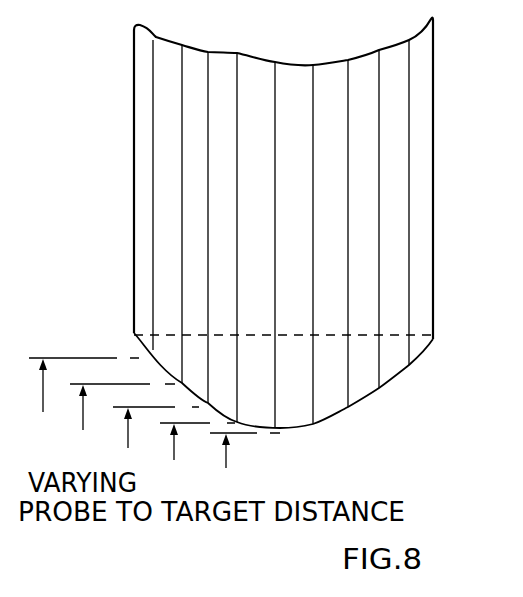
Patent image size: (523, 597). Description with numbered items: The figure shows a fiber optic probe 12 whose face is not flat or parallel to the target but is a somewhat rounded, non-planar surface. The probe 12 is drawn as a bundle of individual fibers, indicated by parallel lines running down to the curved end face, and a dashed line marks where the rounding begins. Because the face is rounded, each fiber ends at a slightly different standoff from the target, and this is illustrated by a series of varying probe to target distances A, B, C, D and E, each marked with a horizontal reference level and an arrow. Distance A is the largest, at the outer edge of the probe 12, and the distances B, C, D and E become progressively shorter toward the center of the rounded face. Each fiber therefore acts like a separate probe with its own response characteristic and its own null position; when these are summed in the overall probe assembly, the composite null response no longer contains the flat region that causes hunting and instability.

The probe 12 is at (441, 134).
The probe to target distance A is at (84, 374).
The probe to target distance B is at (122, 396).
The probe to target distance C is at (156, 417).
The probe to target distance D is at (190, 441).
The probe to target distance E is at (238, 450).